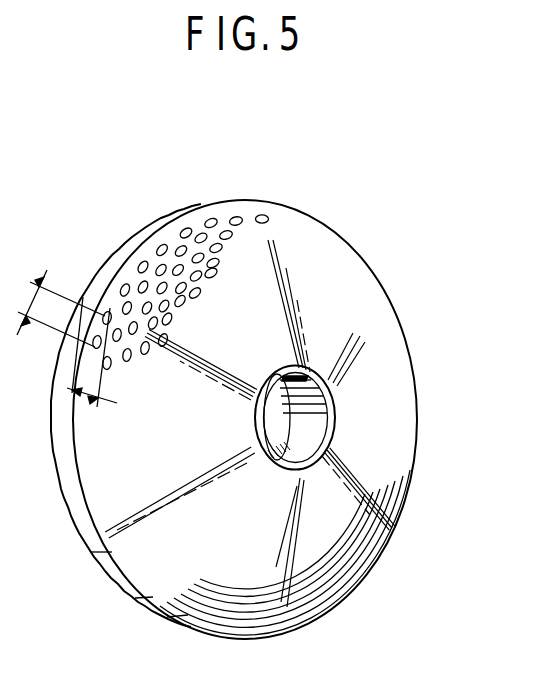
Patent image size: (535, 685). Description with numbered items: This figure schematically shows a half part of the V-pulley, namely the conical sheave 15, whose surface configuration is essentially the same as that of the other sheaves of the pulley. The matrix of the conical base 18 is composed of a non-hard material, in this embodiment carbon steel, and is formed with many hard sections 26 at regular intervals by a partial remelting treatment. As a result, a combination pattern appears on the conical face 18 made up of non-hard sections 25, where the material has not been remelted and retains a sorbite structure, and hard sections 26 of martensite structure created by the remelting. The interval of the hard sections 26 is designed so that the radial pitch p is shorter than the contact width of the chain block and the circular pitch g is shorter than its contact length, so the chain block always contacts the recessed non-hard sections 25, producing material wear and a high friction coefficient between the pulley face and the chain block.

The conical sheave 15 is at (370, 273).
The conical base 18 is at (382, 362).
The non-hard sections 25 is at (173, 243).
The hard sections 26 is at (187, 229).
The circular pitch g is at (60, 316).
The radial pitch p is at (95, 366).